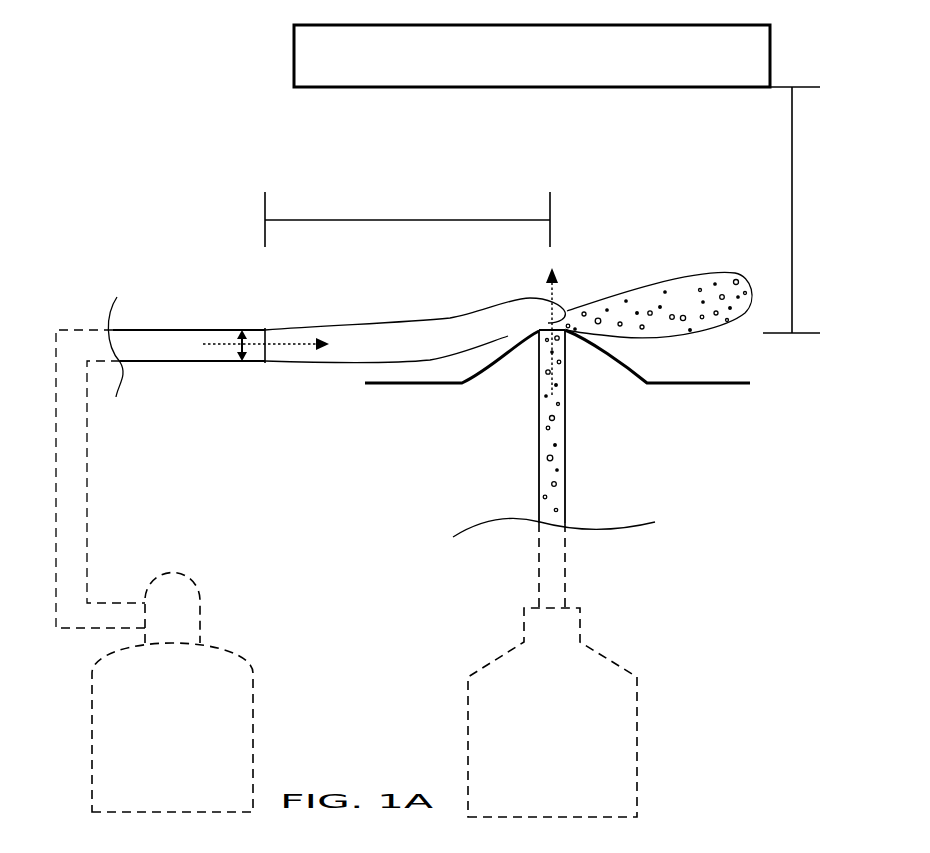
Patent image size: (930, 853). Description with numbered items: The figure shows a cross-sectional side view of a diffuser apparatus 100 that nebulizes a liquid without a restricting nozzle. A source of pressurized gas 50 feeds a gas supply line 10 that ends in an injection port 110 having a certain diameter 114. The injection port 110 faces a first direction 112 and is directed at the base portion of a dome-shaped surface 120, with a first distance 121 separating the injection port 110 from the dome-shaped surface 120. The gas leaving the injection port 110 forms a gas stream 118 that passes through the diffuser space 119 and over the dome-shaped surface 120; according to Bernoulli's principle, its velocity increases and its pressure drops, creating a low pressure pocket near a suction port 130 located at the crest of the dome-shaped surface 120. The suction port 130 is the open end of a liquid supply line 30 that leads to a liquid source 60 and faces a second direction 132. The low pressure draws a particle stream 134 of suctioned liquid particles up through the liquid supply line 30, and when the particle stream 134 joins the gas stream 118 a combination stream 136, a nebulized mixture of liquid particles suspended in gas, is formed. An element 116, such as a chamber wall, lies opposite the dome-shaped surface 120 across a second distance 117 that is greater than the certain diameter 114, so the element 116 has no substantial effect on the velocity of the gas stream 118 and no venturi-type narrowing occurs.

The diffuser apparatus 100 is at (165, 121).
The element 116 is at (514, 71).
The second distance 117 is at (792, 143).
The diffuser space 119 is at (565, 151).
The first distance 121 is at (418, 220).
The gas supply line 10 is at (181, 330).
The injection port 110 is at (268, 330).
The certain diameter 114 is at (240, 330).
The first direction 112 is at (312, 347).
The gas stream 118 is at (391, 355).
The dome-shaped surface 120 is at (630, 360).
The suction port 130 is at (542, 338).
The second direction 132 is at (555, 292).
The particle stream 134 is at (550, 410).
The liquid supply line 30 is at (566, 475).
The combination stream 136 is at (668, 308).
The source of pressurized gas 50 is at (237, 688).
The liquid source 60 is at (605, 658).